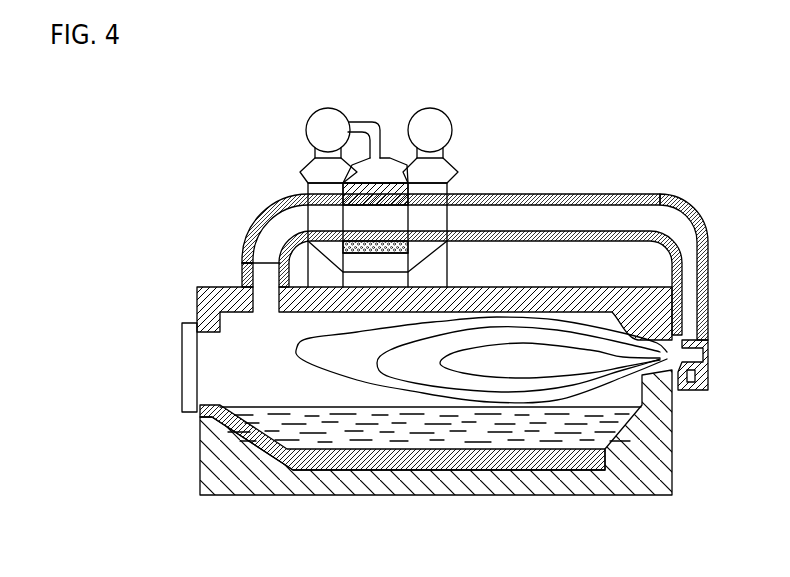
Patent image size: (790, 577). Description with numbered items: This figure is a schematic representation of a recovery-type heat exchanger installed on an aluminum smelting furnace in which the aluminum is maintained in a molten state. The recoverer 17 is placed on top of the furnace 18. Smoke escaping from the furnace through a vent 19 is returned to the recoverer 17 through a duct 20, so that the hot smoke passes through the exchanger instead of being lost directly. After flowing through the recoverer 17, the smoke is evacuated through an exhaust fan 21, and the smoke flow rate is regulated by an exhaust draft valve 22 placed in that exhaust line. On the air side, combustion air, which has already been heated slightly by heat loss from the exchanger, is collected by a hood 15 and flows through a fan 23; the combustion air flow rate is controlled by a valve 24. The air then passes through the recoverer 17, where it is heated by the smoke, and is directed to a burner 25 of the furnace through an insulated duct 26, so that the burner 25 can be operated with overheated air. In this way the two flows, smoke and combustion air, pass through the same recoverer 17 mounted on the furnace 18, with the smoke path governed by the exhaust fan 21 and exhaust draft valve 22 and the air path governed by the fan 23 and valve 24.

The hood 15 is at (388, 158).
The recoverer 17 is at (433, 248).
The furnace 18 is at (270, 496).
The vent 19 is at (249, 280).
The duct 20 is at (258, 217).
The exhaust fan 21 is at (441, 122).
The exhaust draft valve 22 is at (446, 170).
The fan 23 is at (316, 122).
The valve 24 is at (313, 169).
The burner 25 is at (707, 356).
The insulated duct 26 is at (650, 194).